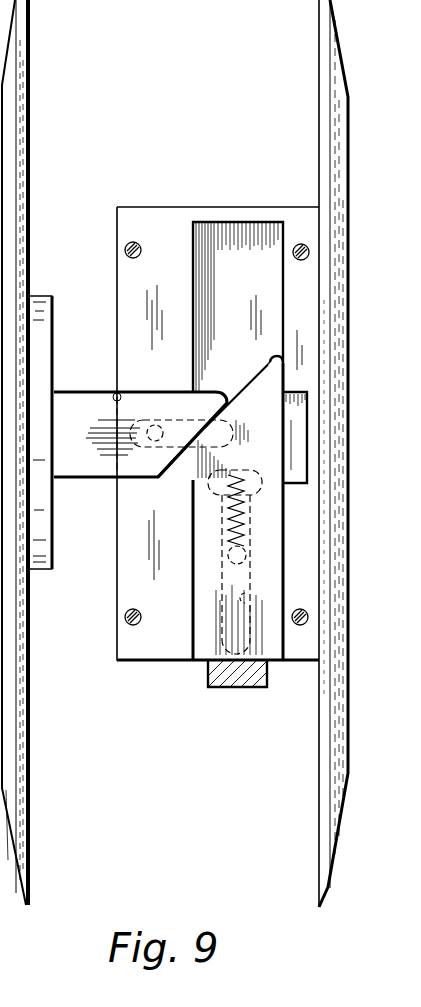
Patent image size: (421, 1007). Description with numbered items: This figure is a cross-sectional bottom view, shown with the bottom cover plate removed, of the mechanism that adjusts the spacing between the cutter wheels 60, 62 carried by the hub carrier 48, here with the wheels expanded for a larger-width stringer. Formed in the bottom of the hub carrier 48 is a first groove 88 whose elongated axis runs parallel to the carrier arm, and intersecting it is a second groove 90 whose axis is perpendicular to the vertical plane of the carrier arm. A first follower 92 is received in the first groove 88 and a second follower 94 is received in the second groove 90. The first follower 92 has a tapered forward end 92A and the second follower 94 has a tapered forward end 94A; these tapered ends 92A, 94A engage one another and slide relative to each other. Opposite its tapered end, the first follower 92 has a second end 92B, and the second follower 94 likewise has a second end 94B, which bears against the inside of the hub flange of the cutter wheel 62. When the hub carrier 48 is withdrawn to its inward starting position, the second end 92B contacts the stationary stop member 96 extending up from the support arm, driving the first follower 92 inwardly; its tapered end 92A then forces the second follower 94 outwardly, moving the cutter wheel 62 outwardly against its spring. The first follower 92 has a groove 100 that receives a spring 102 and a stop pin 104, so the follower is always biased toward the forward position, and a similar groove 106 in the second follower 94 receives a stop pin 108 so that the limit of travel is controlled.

The hub carrier 48 is at (172, 212).
The first groove 88 is at (283, 248).
The cutter wheel 60 is at (22, 727).
The cutter wheel 62 is at (335, 693).
The first follower 92 is at (283, 448).
The tapered forward end of first follower 92A is at (272, 360).
The second end of first follower 92B is at (200, 665).
The groove in second follower 106 is at (224, 406).
The stationary stop member 96 is at (238, 673).
The second follower 94 is at (87, 470).
The tapered forward end of second follower 94A is at (182, 478).
The second end of second follower 94B is at (50, 410).
The second groove 90 is at (114, 396).
The pivot pin 108 is at (155, 426).
The spring 102 is at (243, 533).
The stop pin 104 is at (248, 557).
The groove in first follower 100 is at (243, 597).